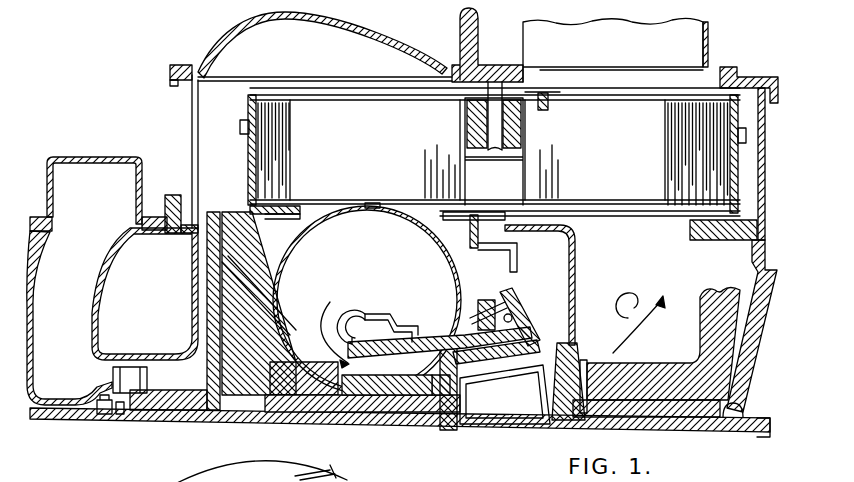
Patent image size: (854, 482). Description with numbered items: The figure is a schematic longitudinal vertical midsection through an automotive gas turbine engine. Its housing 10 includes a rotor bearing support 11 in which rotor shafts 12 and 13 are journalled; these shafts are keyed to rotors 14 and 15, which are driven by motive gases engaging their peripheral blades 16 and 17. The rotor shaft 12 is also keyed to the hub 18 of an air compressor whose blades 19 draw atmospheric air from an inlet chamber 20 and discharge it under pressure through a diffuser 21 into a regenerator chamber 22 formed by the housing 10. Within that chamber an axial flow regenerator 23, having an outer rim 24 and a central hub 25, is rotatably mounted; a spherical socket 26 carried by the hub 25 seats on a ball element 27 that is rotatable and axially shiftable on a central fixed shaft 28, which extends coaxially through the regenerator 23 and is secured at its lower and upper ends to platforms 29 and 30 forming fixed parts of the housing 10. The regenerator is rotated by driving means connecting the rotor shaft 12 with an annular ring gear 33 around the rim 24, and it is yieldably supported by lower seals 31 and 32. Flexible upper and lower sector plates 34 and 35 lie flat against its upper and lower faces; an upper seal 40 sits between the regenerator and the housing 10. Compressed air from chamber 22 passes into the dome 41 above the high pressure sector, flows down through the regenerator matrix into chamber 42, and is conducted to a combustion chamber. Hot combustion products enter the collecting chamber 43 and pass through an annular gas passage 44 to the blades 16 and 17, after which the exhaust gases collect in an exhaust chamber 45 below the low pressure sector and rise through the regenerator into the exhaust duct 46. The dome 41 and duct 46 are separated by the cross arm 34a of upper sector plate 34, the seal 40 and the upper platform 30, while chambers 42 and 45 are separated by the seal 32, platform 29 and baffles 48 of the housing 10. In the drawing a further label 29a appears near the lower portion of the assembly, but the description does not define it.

The housing 10 is at (192, 47).
The regenerator chamber 22 is at (205, 100).
The annular ring gear 33 is at (243, 126).
The outer rim 24 is at (254, 160).
The upper sector plate 34 is at (352, 100).
The dome 41 is at (380, 59).
The upper platform 30 is at (478, 67).
The exhaust duct 46 is at (628, 27).
The upper seal 40 is at (680, 97).
The cross arm 34a is at (530, 95).
The lower sector plate 35 is at (608, 200).
The axial flow regenerator 23 is at (380, 141).
The ball element 27 is at (527, 137).
The spherical socket 26 is at (477, 127).
The central hub 25 is at (527, 117).
The central fixed shaft 28 is at (483, 137).
The inlet chamber 20 is at (84, 278).
The diffuser 21 is at (203, 255).
The compressor blades 19 is at (150, 377).
The compressor hub 18 is at (175, 420).
The rotor bearing support 11 is at (237, 248).
The lower seal 31 is at (295, 210).
The collecting chamber 43 is at (376, 280).
The lower seal 32 is at (517, 278).
The insert 29a is at (369, 318).
The rotor shaft 12 is at (370, 420).
The annular gas passage 44 is at (390, 367).
The chamber below regenerator 42 is at (408, 205).
The lower platform 29 is at (435, 212).
The baffles 48 is at (571, 284).
The peripheral blades 16 is at (460, 378).
The rotor 15 is at (567, 386).
The rotor 14 is at (463, 386).
The peripheral blades 17 is at (572, 348).
The exhaust chamber 45 is at (636, 269).
The rotor shaft 13 is at (580, 417).